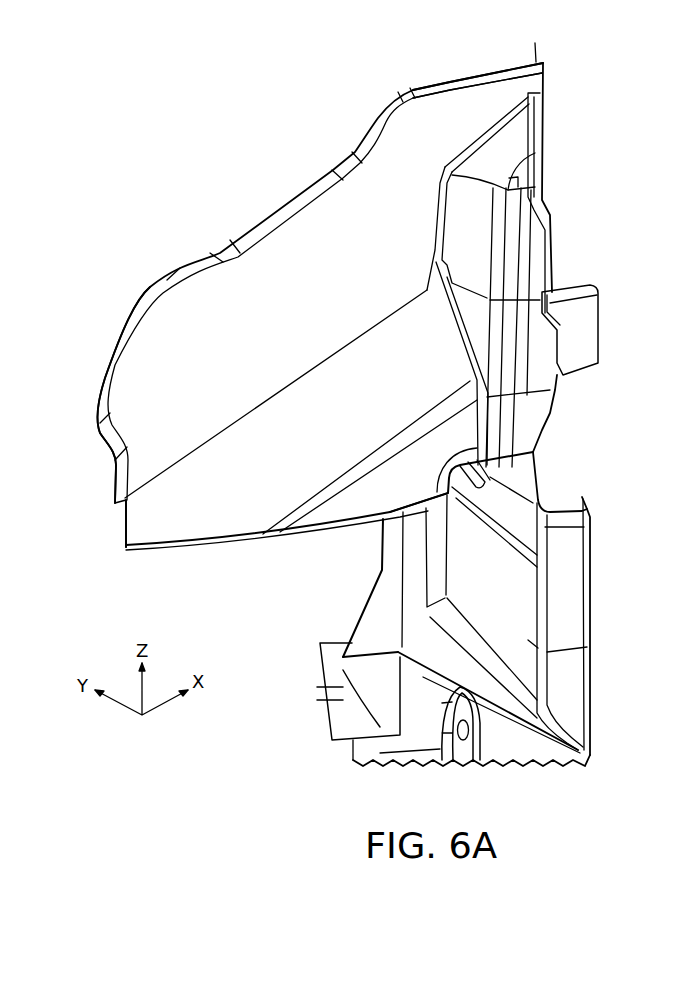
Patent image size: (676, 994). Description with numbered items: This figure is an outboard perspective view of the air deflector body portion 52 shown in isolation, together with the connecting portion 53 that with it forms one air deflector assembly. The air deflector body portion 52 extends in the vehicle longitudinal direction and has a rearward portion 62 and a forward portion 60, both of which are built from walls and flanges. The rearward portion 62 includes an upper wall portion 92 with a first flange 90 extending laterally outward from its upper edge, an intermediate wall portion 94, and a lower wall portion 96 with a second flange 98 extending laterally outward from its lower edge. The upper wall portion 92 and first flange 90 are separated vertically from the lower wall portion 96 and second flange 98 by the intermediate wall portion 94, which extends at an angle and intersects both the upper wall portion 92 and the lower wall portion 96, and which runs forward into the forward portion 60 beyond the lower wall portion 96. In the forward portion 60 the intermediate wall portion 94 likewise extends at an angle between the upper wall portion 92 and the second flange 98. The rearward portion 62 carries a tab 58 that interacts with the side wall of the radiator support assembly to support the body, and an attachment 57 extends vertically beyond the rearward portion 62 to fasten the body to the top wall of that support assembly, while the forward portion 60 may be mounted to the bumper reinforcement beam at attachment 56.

The air deflector body portion 52 is at (317, 315).
The connecting portion 53 is at (600, 562).
The attachment 56 is at (126, 549).
The attachment 57 is at (537, 50).
The tab 58 is at (593, 330).
The forward portion 60 is at (83, 452).
The rearward portion 62 is at (330, 123).
The first flange 90 is at (443, 85).
The upper wall portion 92 is at (373, 244).
The intermediate wall portion 94 is at (410, 364).
The lower wall portion 96 is at (406, 488).
The second flange 98 is at (341, 525).